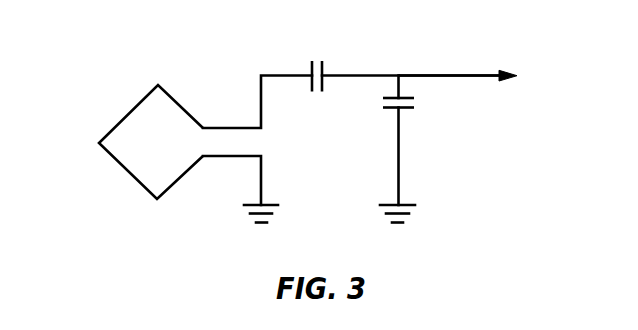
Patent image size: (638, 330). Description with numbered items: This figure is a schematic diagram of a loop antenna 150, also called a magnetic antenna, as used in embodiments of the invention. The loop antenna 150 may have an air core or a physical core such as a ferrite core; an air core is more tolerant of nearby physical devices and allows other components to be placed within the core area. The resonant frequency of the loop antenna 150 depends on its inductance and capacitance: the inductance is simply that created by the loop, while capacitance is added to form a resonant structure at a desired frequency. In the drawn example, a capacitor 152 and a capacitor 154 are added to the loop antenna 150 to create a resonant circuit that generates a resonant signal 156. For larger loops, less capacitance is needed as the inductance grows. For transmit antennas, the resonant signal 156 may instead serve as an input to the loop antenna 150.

The loop antenna 150 is at (128, 110).
The capacitor 152 is at (323, 66).
The capacitor 154 is at (406, 110).
The resonant signal 156 is at (433, 74).